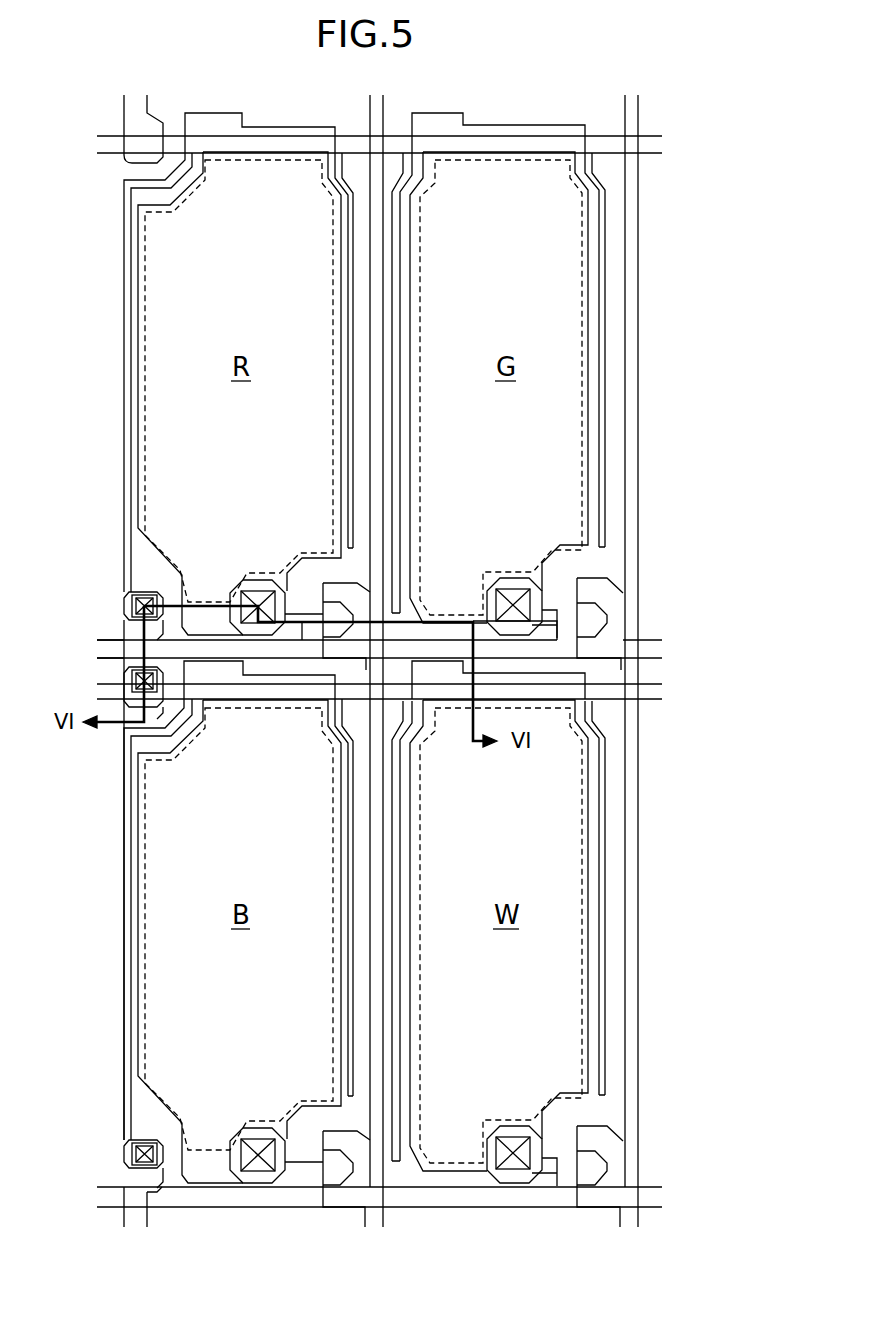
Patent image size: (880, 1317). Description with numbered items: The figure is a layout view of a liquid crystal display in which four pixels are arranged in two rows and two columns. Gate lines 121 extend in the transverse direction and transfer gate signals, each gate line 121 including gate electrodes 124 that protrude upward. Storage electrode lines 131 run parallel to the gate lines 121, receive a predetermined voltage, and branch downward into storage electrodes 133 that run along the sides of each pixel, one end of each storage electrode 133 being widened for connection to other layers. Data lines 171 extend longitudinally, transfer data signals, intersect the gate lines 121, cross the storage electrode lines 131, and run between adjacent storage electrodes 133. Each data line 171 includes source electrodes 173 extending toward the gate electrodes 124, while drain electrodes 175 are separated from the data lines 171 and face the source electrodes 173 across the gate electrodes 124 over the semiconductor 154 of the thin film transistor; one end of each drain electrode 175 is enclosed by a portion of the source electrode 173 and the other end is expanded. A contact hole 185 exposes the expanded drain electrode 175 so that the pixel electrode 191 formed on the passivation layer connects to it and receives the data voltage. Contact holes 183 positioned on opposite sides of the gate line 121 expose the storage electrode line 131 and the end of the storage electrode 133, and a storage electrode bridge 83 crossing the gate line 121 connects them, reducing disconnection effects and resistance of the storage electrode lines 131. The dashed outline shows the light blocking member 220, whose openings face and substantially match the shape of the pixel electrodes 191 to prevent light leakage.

The light blocking member 220 is at (145, 247).
The pixel electrode 191 is at (128, 295).
The storage electrode 133 is at (122, 361).
The data line 171 is at (371, 270).
The drain electrode 175 is at (513, 580).
The gate electrode 124 is at (590, 573).
The source electrode 173 is at (590, 600).
The contact hole 185 is at (525, 605).
The semiconductor 154 is at (585, 635).
The contact hole 183 is at (125, 600).
The gate line 121 is at (113, 640).
The storage electrode bridge 83 is at (122, 652).
The storage electrode line 131 is at (253, 703).